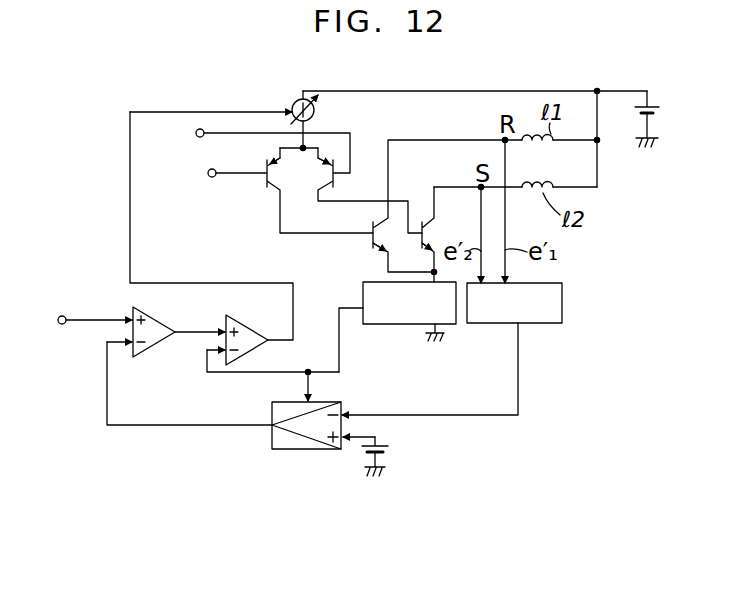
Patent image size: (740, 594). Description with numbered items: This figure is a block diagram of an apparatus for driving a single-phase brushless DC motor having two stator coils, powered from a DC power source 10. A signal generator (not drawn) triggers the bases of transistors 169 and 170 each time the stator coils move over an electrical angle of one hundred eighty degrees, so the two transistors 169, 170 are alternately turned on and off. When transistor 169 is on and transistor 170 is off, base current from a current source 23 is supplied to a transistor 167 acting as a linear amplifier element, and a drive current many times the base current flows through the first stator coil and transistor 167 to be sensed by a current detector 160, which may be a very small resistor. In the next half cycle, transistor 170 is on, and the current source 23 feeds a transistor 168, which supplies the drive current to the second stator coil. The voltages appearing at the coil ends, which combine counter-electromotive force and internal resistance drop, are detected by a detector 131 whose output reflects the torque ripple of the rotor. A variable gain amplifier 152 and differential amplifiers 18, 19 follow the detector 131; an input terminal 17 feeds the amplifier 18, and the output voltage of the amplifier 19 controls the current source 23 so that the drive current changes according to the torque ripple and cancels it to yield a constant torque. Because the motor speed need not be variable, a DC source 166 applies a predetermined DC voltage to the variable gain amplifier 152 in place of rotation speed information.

The DC power source 10 is at (652, 118).
The input terminal 17 is at (56, 316).
The differential amplifier 18 is at (167, 303).
The differential amplifier 19 is at (252, 325).
The current source 23 is at (315, 113).
The detector 131 is at (540, 323).
The variable gain amplifier 152 is at (303, 449).
The current detector 160 is at (456, 324).
The DC source 166 is at (389, 447).
The transistor 167 is at (362, 243).
The transistor 168 is at (450, 221).
The transistor 169 is at (283, 190).
The transistor 170 is at (325, 186).